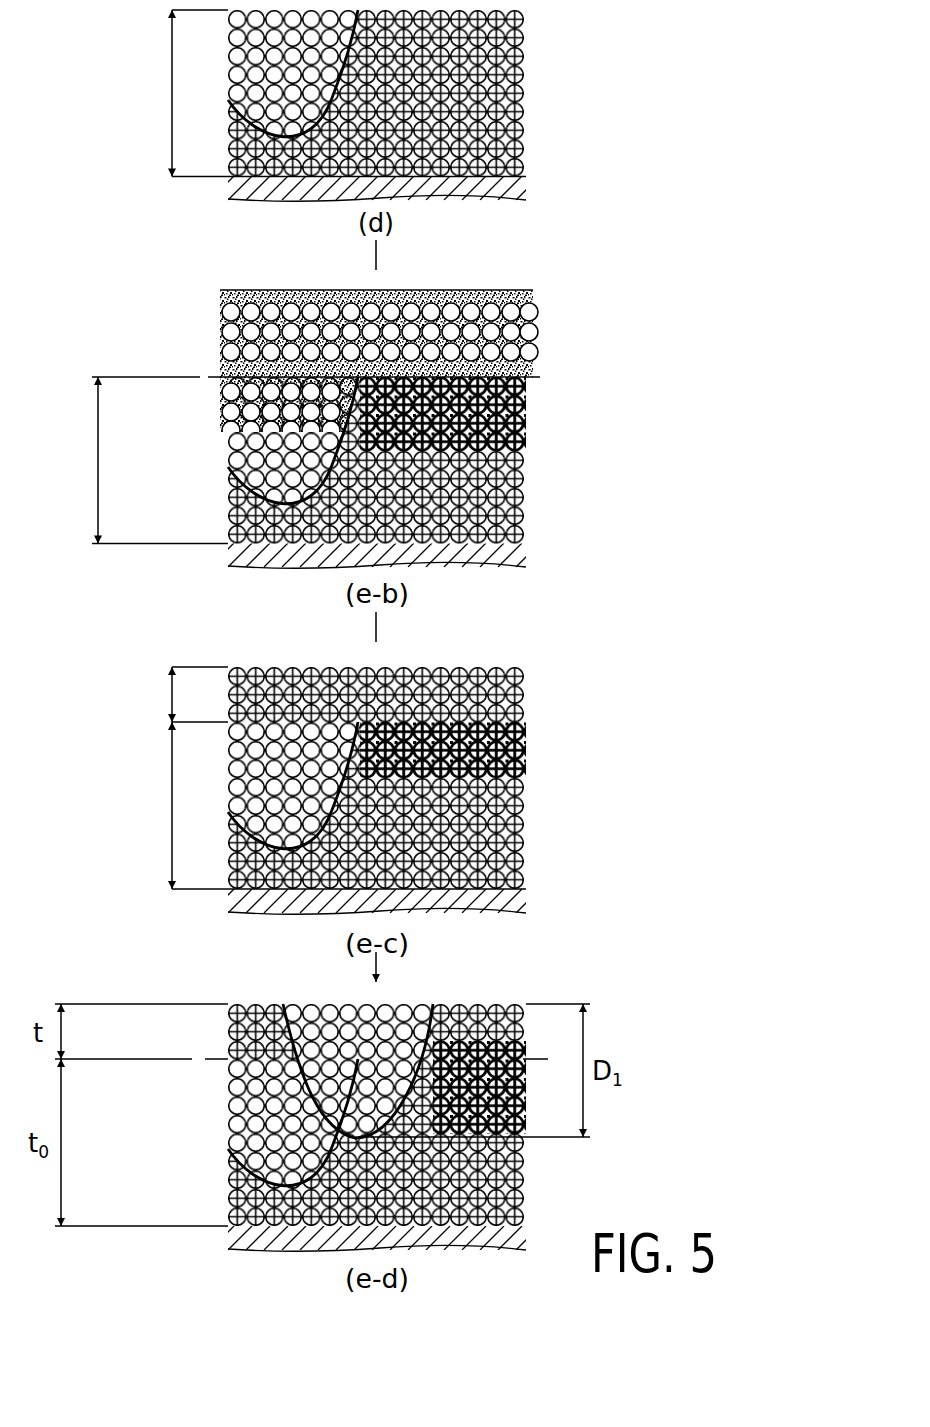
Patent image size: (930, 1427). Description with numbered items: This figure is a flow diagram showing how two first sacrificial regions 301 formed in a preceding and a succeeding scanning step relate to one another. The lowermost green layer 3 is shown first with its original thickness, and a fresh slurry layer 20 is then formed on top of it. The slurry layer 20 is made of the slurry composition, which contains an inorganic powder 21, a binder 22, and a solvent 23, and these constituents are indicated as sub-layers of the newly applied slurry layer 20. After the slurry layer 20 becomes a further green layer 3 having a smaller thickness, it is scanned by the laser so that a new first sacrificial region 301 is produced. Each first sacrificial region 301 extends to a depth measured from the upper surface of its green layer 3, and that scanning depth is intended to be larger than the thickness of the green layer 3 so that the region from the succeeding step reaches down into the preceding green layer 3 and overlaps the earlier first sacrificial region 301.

The green layer 3 is at (531, 81).
The slurry layer 20 is at (459, 347).
The inorganic powder 21 is at (428, 360).
The binder 22 is at (533, 319).
The solvent 23 is at (513, 292).
The first sacrificial region 301 is at (305, 1118).